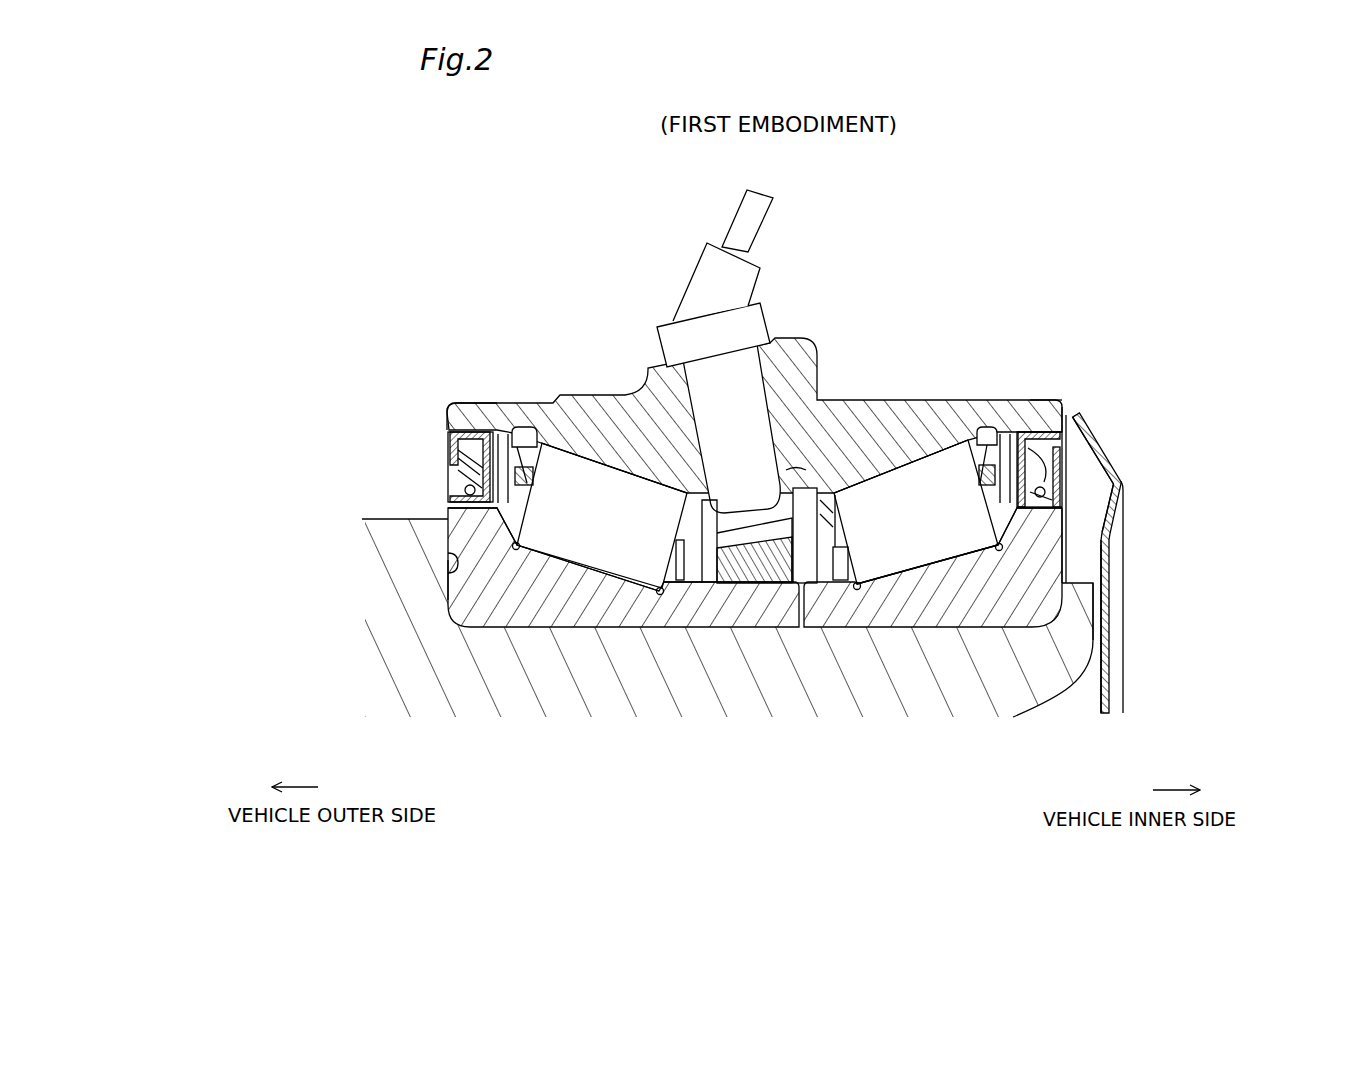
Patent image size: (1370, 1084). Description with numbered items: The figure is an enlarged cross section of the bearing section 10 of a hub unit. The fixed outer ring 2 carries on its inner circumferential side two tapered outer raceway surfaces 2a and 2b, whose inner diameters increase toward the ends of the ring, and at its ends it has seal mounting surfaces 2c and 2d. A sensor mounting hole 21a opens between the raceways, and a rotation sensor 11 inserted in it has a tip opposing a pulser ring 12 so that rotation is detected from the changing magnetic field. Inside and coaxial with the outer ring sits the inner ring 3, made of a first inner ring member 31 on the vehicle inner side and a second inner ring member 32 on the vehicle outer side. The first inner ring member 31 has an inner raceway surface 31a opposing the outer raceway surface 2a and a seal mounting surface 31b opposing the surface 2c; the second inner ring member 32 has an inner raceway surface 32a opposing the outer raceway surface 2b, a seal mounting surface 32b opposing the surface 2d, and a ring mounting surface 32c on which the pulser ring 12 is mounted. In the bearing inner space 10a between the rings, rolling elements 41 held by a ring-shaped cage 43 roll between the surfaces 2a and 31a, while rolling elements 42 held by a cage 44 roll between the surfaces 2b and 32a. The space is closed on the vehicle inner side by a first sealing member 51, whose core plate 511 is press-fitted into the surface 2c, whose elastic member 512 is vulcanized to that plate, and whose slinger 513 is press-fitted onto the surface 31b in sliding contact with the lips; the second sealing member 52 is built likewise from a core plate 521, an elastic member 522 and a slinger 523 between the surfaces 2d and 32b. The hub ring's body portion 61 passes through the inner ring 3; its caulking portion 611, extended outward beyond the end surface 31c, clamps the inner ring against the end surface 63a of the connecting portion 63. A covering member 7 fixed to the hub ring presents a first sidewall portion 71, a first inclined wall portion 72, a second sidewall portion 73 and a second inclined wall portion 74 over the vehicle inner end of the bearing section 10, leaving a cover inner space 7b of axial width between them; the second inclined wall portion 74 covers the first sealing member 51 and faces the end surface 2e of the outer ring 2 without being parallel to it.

The outer ring 2 is at (646, 352).
The outer raceway surface 2a is at (873, 478).
The outer raceway surface 2b is at (615, 473).
The seal mounting surface 2c is at (1042, 437).
The seal mounting surface 2d is at (472, 425).
The end surface 2e is at (1065, 412).
The inner ring 3 is at (785, 656).
The first inner ring member 31 is at (827, 607).
The inner raceway surface 31a is at (867, 584).
The seal mounting surface 31b is at (1034, 512).
The end surface 31c is at (1068, 580).
The second inner ring member 32 is at (790, 607).
The inner raceway surface 32a is at (557, 560).
The seal mounting surface 32b is at (490, 517).
The ring mounting surface 32c is at (718, 587).
The rolling elements 41 is at (917, 480).
The rolling elements 42 is at (577, 470).
The cage 43 is at (973, 443).
The cage 44 is at (520, 428).
The first sealing member 51 is at (1170, 464).
The core plate 511 is at (1020, 437).
The elastic member 512 is at (1060, 487).
The slinger 513 is at (1060, 507).
The second sealing member 52 is at (279, 444).
The core plate 521 is at (460, 432).
The elastic member 522 is at (460, 465).
The slinger 523 is at (453, 482).
The body portion 61 is at (878, 678).
The caulking portion 611 is at (1107, 617).
The connecting portion 63 is at (447, 566).
The end surface 63a is at (456, 556).
The covering member 7 is at (1221, 574).
The first sidewall portion 71 is at (1080, 603).
The first inclined wall portion 72 is at (1108, 498).
The second sidewall portion 73 is at (1123, 500).
The second inclined wall portion 74 is at (1112, 465).
The cover inner space 7b is at (1073, 560).
The bearing section 10 is at (718, 497).
The bearing inner space 10a is at (798, 486).
The rotation sensor 11 is at (750, 302).
The sensor mounting hole 21a is at (758, 357).
The pulser ring 12 is at (757, 585).